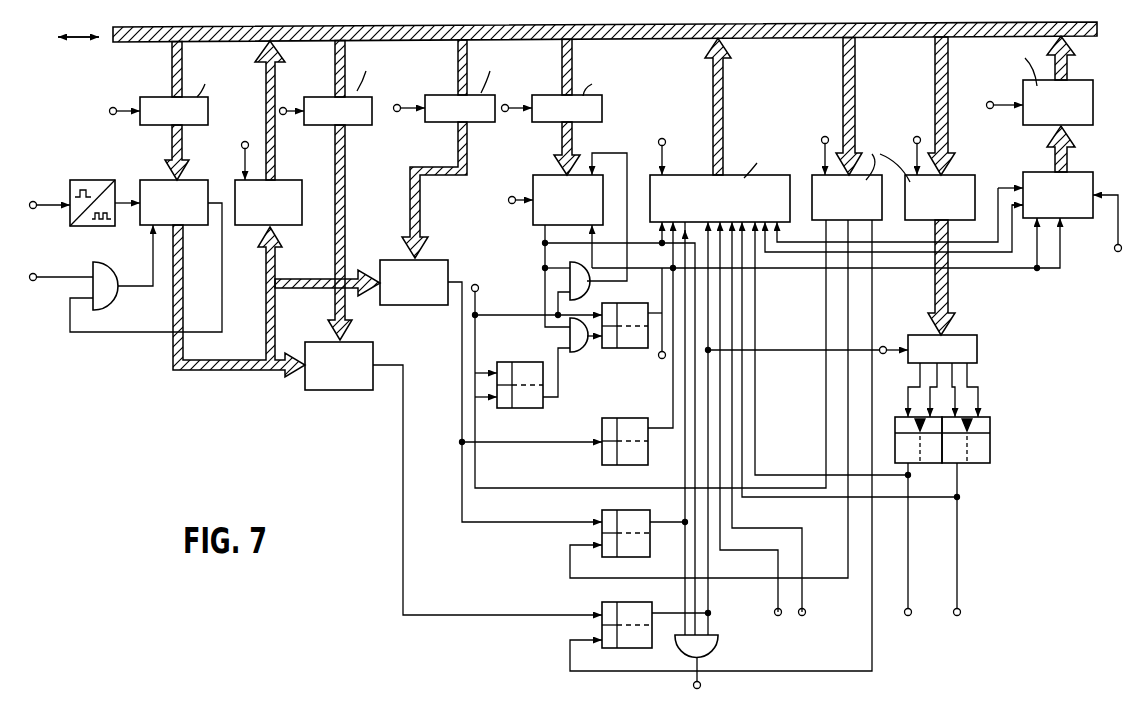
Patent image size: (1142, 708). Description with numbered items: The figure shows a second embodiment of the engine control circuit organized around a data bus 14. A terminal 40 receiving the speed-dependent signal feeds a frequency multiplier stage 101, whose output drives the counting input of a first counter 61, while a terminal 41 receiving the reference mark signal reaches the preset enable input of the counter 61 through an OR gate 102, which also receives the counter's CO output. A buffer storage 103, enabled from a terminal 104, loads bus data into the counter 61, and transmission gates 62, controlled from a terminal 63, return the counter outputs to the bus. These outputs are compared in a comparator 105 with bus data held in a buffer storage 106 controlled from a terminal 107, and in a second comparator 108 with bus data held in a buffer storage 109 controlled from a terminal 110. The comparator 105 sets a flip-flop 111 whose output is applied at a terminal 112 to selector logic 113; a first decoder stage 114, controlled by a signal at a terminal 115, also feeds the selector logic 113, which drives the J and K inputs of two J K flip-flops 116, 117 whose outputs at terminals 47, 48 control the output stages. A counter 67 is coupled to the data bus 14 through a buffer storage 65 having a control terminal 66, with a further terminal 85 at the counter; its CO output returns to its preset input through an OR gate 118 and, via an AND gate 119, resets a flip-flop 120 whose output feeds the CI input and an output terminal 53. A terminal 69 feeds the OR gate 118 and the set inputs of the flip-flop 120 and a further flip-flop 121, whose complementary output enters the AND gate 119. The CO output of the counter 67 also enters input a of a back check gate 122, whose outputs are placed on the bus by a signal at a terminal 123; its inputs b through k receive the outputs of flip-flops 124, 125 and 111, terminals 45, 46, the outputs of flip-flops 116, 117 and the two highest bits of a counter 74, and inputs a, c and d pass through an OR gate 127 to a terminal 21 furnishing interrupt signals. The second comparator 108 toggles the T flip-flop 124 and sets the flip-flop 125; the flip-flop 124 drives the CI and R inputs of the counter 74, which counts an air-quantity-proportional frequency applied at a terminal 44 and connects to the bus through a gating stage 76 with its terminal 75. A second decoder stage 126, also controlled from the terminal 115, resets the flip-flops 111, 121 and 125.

The data bus 14 is at (644, 37).
The terminal 21 is at (702, 686).
The terminal 40 is at (34, 202).
The terminal 41 is at (34, 274).
The terminal 44 is at (1115, 252).
The terminal 45 is at (777, 618).
The terminal 46 is at (804, 618).
The terminal 47 is at (906, 618).
The terminal 48 is at (959, 618).
The output terminal 53 is at (660, 358).
The first counter 61 is at (186, 183).
The set of transmission gates 62 is at (268, 202).
The terminal 63 is at (243, 130).
The buffer storage 65 is at (589, 95).
The input terminal 66 is at (507, 104).
The counter 67 is at (556, 178).
The terminal 69 is at (479, 287).
The counter 74 is at (1040, 180).
The input terminal 75 is at (991, 101).
The gating stage 76 is at (1040, 87).
The input terminal 85 is at (508, 200).
The frequency multiplier stage 101 is at (89, 182).
The OR gate 102 is at (108, 275).
The buffer 103 is at (195, 97).
The terminal 104 is at (113, 107).
The comparator 105 is at (339, 366).
The further buffer storage 106 is at (355, 90).
The terminal 107 is at (284, 107).
The comparator 108 is at (414, 282).
The buffer storage 109 is at (479, 88).
The terminal 110 is at (396, 104).
The flip-flop 111 is at (634, 611).
The terminal 112 is at (883, 346).
The selector logic 113 is at (971, 348).
The first decoder stage 114 is at (940, 197).
The terminal 115 is at (824, 136).
The J K flip-flop 116 is at (930, 466).
The J K flip-flop 117 is at (980, 466).
The OR gate 118 is at (570, 271).
The AND gate 119 is at (581, 345).
The flip-flop 120 is at (626, 312).
The further flip-flop 121 is at (530, 372).
The back check gate 122 is at (726, 176).
The terminal 123 is at (664, 140).
The flip-flop 124 is at (628, 424).
The flip-flop 125 is at (628, 520).
The second decoder stage 126 is at (868, 180).
The OR gate 127 is at (720, 648).